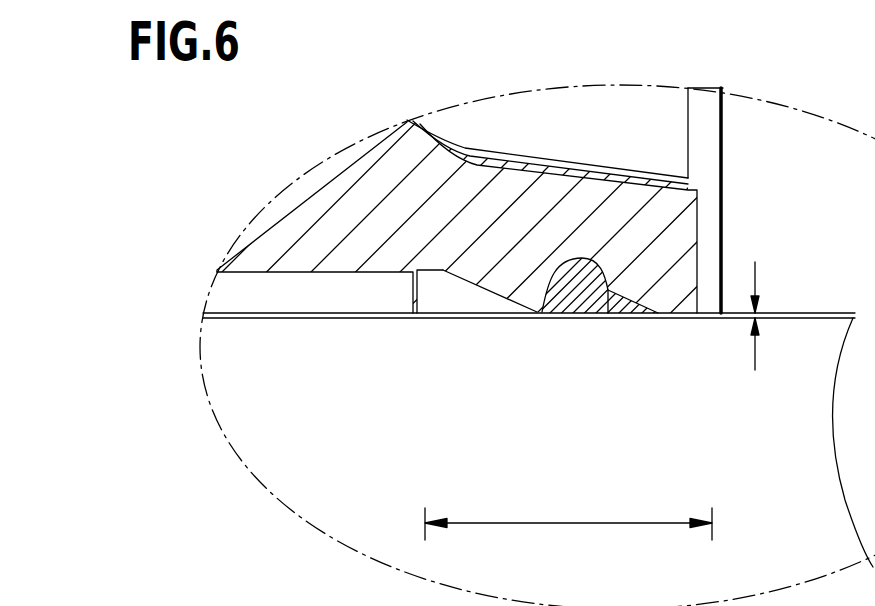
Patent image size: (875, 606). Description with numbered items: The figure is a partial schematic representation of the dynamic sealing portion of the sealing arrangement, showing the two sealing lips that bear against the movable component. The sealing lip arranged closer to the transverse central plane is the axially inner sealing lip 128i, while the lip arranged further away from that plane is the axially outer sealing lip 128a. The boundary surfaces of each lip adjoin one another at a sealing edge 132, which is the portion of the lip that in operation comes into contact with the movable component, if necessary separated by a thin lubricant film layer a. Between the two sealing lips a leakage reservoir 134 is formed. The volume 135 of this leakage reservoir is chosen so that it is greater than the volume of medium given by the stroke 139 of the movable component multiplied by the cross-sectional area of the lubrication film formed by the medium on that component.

The leakage reservoir 134 is at (605, 228).
The axially outer sealing lip 128a is at (672, 288).
The axially inner sealing lip 128i is at (523, 290).
The sealing edge 132 is at (538, 312).
The volume of the leakage reservoir 135 is at (567, 298).
The stroke of the movable component 139 is at (568, 523).
The lubricant film layer a is at (758, 317).